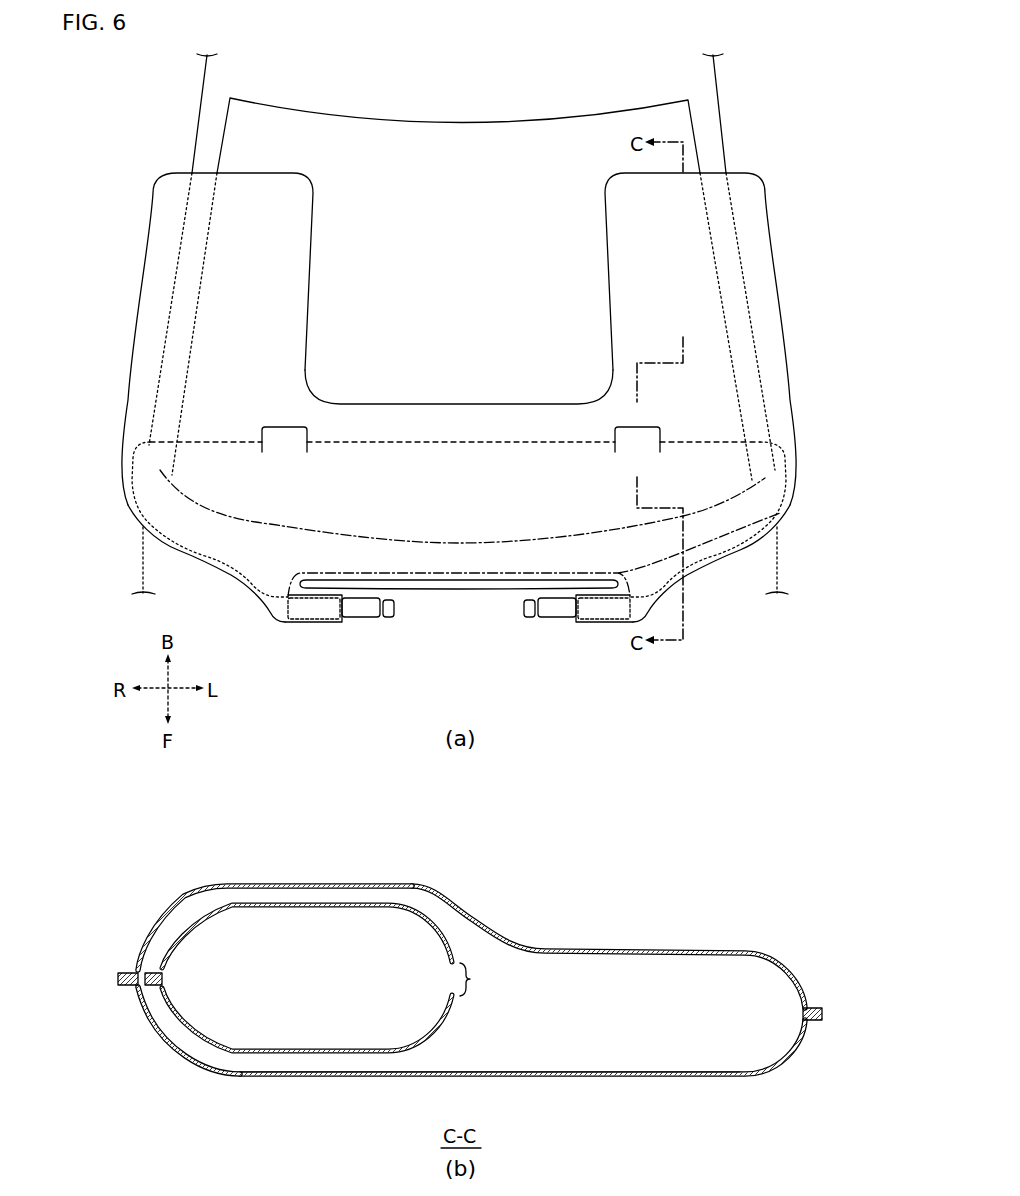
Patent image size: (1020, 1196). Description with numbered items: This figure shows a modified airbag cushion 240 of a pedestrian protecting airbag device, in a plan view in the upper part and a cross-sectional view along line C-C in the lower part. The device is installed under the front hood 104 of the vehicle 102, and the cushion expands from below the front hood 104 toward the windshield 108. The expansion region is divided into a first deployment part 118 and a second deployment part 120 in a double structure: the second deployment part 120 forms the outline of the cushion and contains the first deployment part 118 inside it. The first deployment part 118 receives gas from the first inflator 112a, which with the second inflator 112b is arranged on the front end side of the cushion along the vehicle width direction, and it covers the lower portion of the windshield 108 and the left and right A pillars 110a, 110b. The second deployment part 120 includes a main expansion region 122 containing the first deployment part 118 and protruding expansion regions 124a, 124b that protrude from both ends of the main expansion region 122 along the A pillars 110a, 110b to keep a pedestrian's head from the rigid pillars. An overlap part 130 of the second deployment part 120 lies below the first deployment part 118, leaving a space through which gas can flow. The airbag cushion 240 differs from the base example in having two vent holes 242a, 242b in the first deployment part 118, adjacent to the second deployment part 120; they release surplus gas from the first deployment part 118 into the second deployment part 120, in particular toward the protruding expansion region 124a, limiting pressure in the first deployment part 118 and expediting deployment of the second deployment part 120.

The vehicle 102 is at (718, 64).
The front hood 104 is at (778, 572).
The windshield 108 is at (565, 120).
The A pillar 110a is at (718, 134).
The A pillar 110b is at (218, 140).
The first inflator 112a is at (363, 620).
The second inflator 112b is at (555, 620).
The first deployment part 118 is at (703, 550).
The second deployment part 120 is at (778, 408).
The main expansion region 122 is at (512, 402).
The protruding expansion region 124a is at (777, 270).
The protruding expansion region 124b is at (143, 270).
The overlap part 130 is at (300, 1077).
The airbag cushion 240 is at (146, 139).
The vent hole 242a is at (640, 425).
The vent hole 242b is at (283, 425).